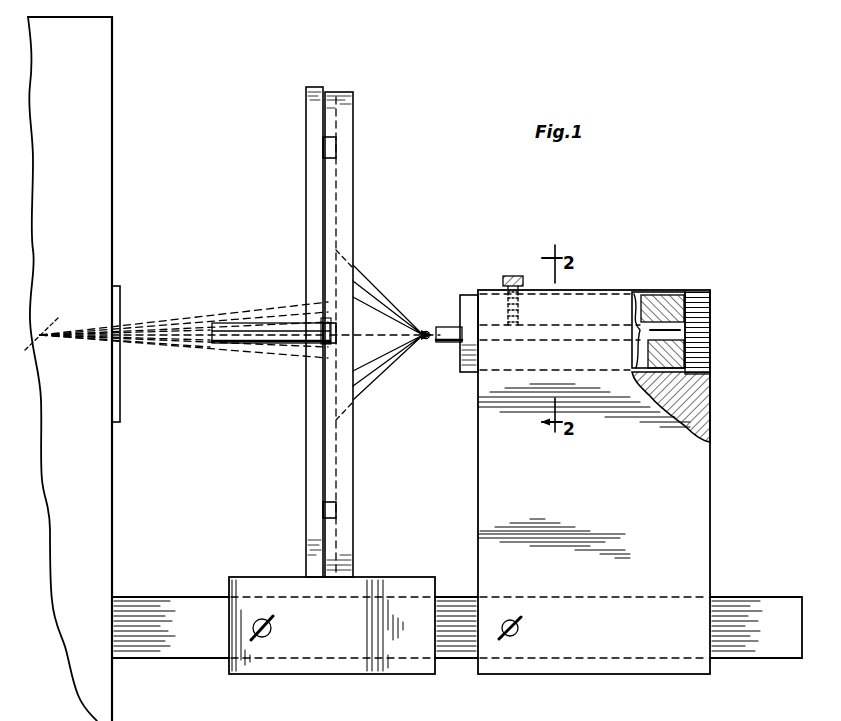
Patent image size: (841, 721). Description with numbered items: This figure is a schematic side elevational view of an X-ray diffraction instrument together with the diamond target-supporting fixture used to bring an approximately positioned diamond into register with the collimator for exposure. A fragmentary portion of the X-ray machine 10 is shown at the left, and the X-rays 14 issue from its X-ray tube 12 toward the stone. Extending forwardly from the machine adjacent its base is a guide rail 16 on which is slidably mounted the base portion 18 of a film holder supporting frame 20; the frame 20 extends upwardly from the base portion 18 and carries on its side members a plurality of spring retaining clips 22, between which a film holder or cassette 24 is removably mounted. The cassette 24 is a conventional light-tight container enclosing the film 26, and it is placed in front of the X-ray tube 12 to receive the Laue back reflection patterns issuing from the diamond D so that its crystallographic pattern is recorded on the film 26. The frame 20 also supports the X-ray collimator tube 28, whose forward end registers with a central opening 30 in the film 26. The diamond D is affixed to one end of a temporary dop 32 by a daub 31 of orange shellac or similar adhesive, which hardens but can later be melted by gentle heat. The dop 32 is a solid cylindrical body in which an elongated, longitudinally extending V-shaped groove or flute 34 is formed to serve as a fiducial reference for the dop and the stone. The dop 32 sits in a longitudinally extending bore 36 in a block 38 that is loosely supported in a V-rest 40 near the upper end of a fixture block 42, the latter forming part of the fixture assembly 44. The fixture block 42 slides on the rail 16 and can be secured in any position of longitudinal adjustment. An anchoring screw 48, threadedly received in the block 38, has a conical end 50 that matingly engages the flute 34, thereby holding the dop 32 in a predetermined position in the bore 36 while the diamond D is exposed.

The X-ray machine 10 is at (115, 42).
The X-ray tube 12 is at (120, 290).
The X-rays 14 is at (170, 318).
The guide rail 16 is at (781, 598).
The base portion 18 is at (392, 577).
The film holder supporting frame 20 is at (304, 472).
The spring retaining clips 22 is at (335, 148).
The film holder or cassette 24 is at (354, 196).
The film 26 is at (345, 430).
The X-ray collimator tube 28 is at (240, 345).
The central opening 30 is at (322, 318).
The daub 31 is at (426, 330).
The temporary dop 32 is at (441, 325).
The V-shaped groove or flute 34 is at (488, 328).
The longitudinally extending bore 36 is at (656, 300).
The block 38 is at (668, 294).
The V-rest 40 is at (696, 332).
The fixture block 42 is at (710, 545).
The fixture assembly 44 is at (722, 441).
The anchoring screw 48 is at (512, 276).
The conical end 50 is at (516, 328).
The diamond D is at (426, 342).